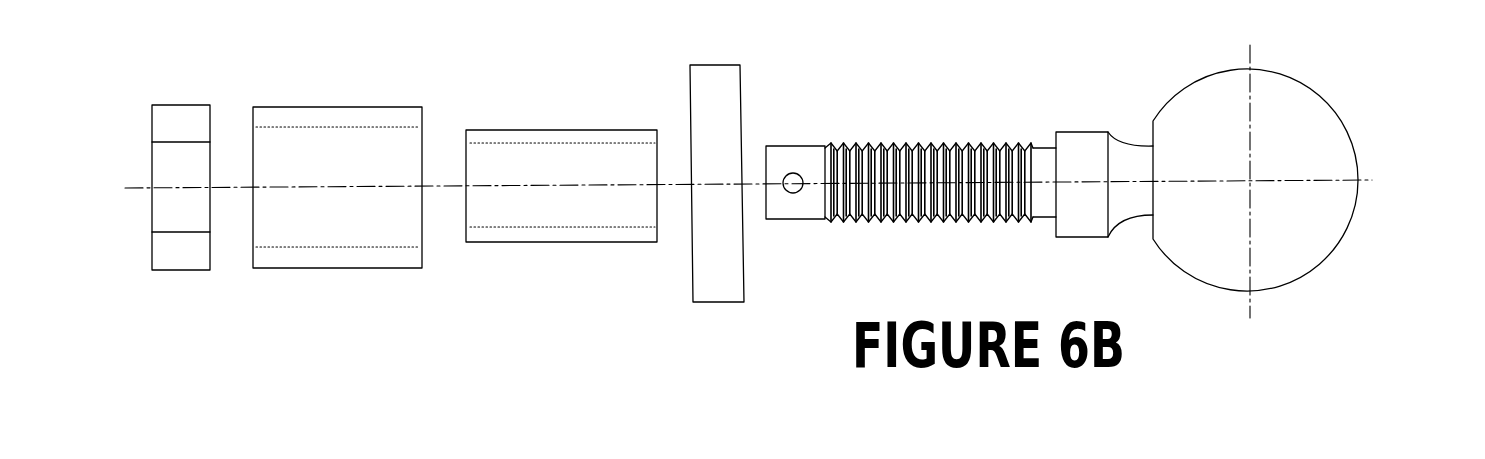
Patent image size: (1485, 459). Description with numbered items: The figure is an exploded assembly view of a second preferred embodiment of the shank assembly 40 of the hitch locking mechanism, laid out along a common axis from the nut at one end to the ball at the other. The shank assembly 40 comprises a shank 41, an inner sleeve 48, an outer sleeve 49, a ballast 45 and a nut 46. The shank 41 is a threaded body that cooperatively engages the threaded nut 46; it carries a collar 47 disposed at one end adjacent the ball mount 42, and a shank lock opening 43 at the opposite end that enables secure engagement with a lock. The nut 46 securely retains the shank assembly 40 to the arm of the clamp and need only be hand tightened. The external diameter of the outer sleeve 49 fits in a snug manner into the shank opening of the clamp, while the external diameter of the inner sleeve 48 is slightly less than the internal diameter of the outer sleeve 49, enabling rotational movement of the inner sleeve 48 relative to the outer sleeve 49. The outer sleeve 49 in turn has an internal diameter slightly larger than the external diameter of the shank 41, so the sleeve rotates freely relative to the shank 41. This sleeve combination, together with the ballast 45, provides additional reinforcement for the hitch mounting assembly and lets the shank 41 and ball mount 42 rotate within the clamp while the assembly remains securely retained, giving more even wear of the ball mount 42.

The shank assembly 40 is at (777, 50).
The shank 41 is at (947, 228).
The ball mount 42 is at (1285, 93).
The shank lock opening 43 is at (790, 170).
The ballast 45 is at (725, 285).
The nut 46 is at (172, 120).
The collar 47 is at (1070, 145).
The inner sleeve 48 is at (608, 225).
The outer sleeve 49 is at (393, 240).